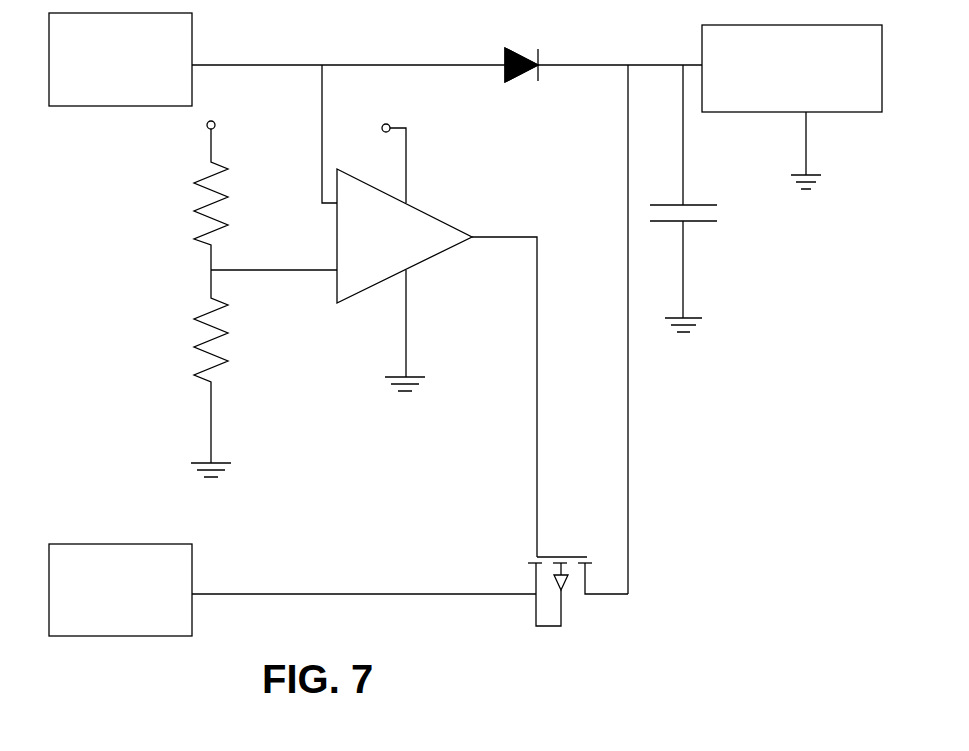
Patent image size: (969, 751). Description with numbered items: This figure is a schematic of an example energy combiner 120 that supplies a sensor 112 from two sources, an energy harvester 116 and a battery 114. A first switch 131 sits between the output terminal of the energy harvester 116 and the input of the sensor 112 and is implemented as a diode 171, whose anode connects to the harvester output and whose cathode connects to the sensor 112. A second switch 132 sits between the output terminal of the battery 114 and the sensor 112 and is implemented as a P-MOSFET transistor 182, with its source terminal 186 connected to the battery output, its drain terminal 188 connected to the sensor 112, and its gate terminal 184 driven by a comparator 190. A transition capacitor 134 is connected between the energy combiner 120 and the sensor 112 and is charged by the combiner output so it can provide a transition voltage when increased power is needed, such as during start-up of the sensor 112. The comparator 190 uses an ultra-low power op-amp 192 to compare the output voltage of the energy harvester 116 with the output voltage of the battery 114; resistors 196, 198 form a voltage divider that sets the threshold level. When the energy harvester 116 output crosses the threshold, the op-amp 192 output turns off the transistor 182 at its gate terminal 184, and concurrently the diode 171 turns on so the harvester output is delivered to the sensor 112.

The energy harvester 116 is at (192, 40).
The energy combiner 120 is at (558, 42).
The diode 171 is at (505, 77).
The comparator 190 is at (300, 182).
The first switch 131 is at (500, 130).
The op-amp 192 is at (420, 210).
The resistor 198 is at (195, 182).
The resistor 196 is at (197, 353).
The sensor 112 is at (782, 112).
The transition capacitor 134 is at (683, 222).
The battery 114 is at (165, 543).
The second switch 132 is at (529, 544).
The source terminal 186 is at (531, 555).
The transistor 182 is at (533, 602).
The gate terminal 184 is at (555, 553).
The drain terminal 188 is at (593, 568).